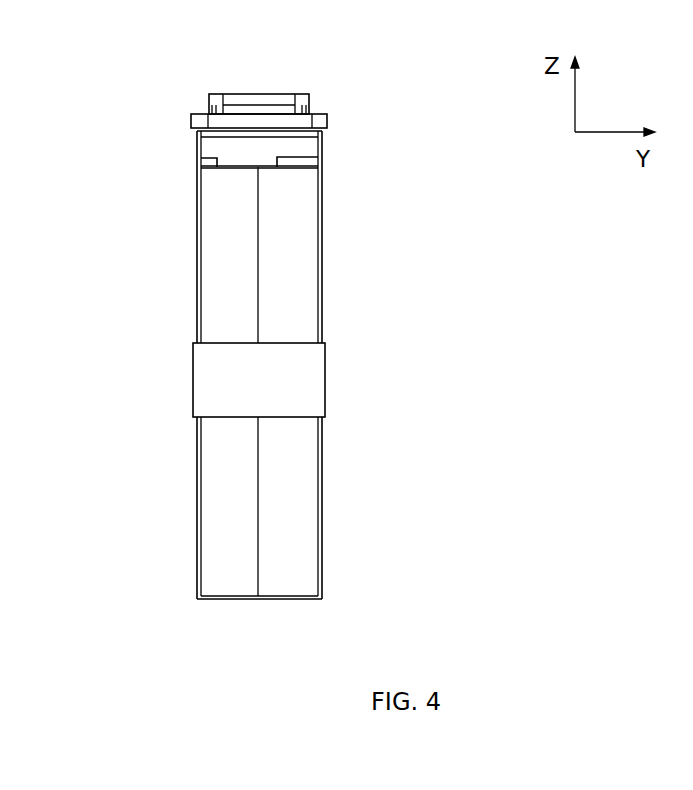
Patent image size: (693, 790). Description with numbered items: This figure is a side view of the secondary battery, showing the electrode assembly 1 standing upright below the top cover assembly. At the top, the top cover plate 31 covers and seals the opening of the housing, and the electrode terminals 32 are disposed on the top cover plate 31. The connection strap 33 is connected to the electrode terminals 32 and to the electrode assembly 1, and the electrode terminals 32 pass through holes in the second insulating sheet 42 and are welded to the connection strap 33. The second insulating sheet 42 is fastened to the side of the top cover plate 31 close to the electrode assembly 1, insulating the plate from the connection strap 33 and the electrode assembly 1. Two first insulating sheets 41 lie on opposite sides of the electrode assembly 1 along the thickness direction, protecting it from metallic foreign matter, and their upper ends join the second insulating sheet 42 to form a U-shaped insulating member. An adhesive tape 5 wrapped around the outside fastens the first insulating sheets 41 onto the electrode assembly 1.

The electrode assembly 1 is at (257, 365).
The adhesive tape 5 is at (302, 381).
The top cover plate 31 is at (188, 123).
The electrode terminal 32 is at (258, 95).
The connection strap 33 is at (318, 138).
The first insulating sheet 41 is at (197, 213).
The second insulating sheet 42 is at (198, 130).